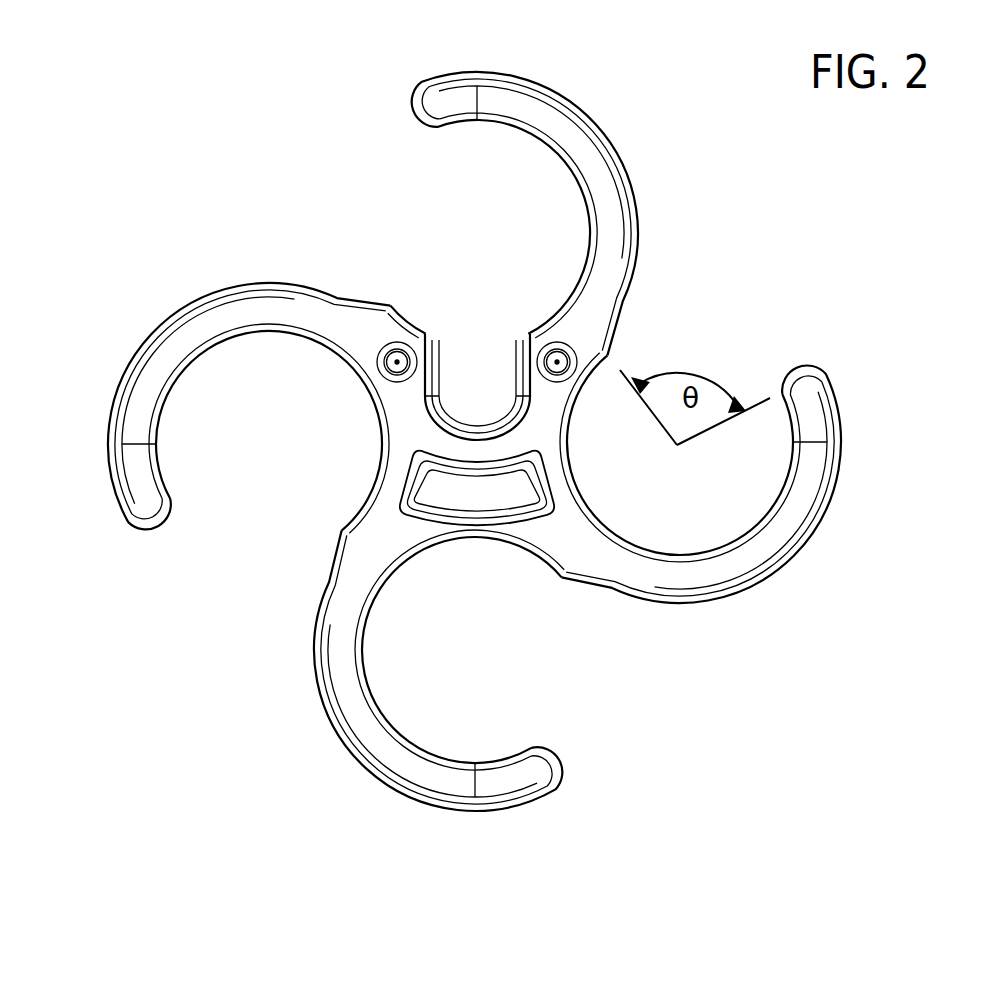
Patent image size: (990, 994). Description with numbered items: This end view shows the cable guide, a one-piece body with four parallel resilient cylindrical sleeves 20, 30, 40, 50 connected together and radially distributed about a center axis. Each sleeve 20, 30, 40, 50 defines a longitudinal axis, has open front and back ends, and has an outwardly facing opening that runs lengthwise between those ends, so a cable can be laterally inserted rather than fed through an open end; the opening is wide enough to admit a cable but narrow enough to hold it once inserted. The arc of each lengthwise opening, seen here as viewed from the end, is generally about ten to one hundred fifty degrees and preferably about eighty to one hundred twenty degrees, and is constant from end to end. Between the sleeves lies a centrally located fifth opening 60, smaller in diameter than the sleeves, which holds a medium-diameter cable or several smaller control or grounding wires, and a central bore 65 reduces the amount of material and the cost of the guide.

The cylindrical sleeve 20 is at (637, 186).
The cylindrical sleeve 30 is at (211, 296).
The cylindrical sleeve 40 is at (320, 675).
The cylindrical sleeve 50 is at (746, 592).
The fifth opening 60 is at (476, 358).
The central bore 65 is at (452, 492).